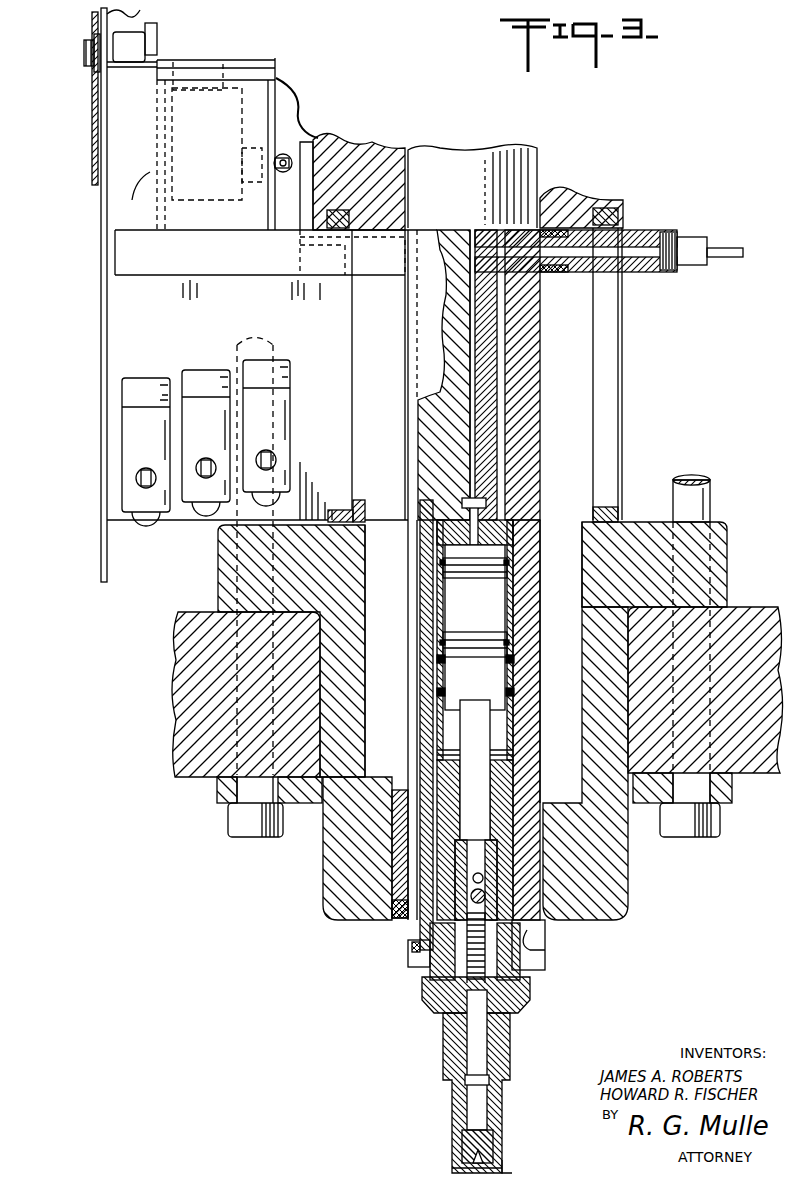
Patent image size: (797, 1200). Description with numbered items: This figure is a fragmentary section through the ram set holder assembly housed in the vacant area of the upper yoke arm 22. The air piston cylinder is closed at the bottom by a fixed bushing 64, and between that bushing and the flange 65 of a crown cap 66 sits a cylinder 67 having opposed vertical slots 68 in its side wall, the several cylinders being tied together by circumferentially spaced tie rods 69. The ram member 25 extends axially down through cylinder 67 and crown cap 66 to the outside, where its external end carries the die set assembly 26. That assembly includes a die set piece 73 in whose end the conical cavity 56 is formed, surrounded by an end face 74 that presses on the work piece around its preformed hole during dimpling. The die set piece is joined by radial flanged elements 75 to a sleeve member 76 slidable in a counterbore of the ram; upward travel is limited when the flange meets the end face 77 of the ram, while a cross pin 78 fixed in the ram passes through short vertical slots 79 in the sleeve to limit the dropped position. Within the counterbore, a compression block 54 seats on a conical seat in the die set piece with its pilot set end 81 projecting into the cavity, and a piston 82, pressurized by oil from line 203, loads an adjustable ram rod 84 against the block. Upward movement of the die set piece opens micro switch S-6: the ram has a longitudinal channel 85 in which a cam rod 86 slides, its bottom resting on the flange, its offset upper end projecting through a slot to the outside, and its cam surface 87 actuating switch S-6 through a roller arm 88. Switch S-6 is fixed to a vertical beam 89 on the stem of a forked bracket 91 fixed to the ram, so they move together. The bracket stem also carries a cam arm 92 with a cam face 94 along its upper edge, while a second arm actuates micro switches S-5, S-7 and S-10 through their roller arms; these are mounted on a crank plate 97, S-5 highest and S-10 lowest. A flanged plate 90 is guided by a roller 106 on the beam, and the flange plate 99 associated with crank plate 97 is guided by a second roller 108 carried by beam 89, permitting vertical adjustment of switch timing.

The upper yoke arm 22 is at (172, 708).
The ram member 25 is at (541, 442).
The die set assembly 26 is at (479, 1081).
The compression block 54 is at (494, 1143).
The conical cavity 56 is at (507, 1172).
The fixed bushing 64 is at (362, 140).
The flange 65 is at (728, 541).
The crown cap 66 is at (328, 900).
The cylinder 67 is at (623, 400).
The vertical slots 68 is at (349, 334).
The tie rods 69 is at (712, 493).
The die set piece 73 is at (505, 1094).
The end face 74 is at (455, 1172).
The radial flanged elements 75 is at (408, 950).
The sleeve member 76 is at (420, 795).
The end face of the ram 77 is at (546, 946).
The cross pin 78 is at (486, 897).
The vertically extending slots 79 is at (486, 881).
The pilot set end 81 is at (470, 1156).
The piston 82 is at (480, 611).
The ram rod 84 is at (482, 727).
The longitudinal channel 85 is at (414, 462).
The cam rod 86 is at (405, 397).
The cam surface 87 is at (308, 122).
The roller arm 88 is at (279, 153).
The vertical beam 89 is at (132, 198).
The flanged plate 90 is at (92, 152).
The forked bracket 91 is at (252, 280).
The cam arm 92 is at (278, 78).
The cam face 94 is at (252, 74).
The crank plate 97 is at (160, 320).
The flange plate 99 is at (100, 312).
The roller 106 is at (88, 66).
The second roller 108 is at (138, 68).
The oil line 203 is at (722, 248).
The micro switch S-6 is at (218, 151).
The micro switch S-10 is at (140, 378).
The micro switch S-7 is at (206, 368).
The micro switch S-5 is at (284, 358).